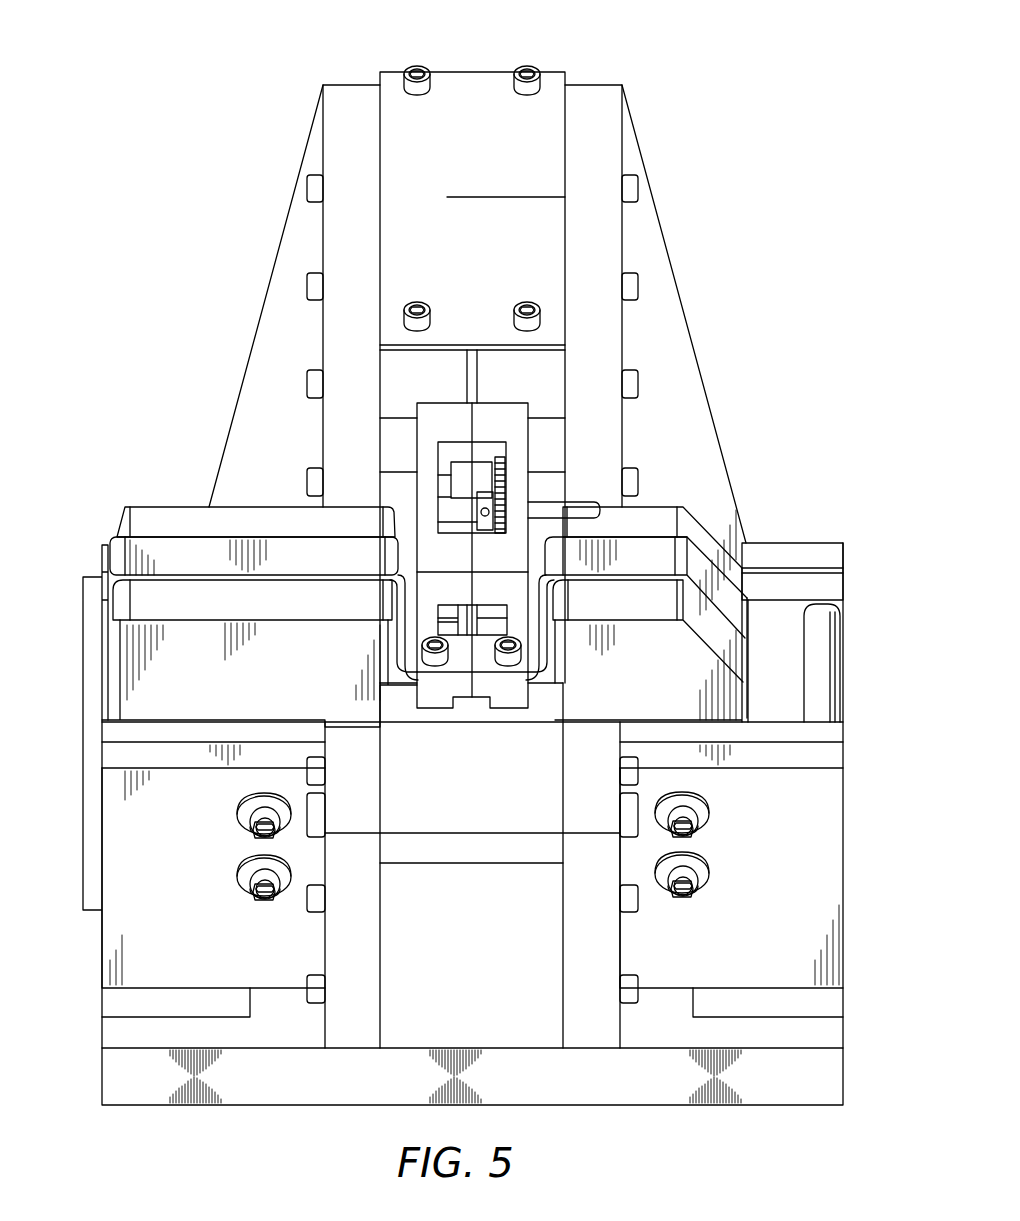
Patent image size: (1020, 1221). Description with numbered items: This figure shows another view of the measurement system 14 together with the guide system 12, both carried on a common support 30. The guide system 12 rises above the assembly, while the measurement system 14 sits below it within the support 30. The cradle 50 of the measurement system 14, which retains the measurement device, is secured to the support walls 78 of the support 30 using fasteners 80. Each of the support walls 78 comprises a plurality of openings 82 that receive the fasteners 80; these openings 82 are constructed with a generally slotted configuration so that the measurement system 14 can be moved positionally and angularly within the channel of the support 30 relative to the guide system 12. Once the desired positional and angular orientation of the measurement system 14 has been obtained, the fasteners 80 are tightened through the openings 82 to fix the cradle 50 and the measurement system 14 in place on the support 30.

The guide system 12 is at (553, 71).
The measurement system 14 is at (124, 507).
The support 30 is at (691, 326).
The cradle 50 is at (822, 729).
The support walls 78 is at (826, 819).
The fasteners 80 is at (264, 902).
The openings 82 is at (245, 789).